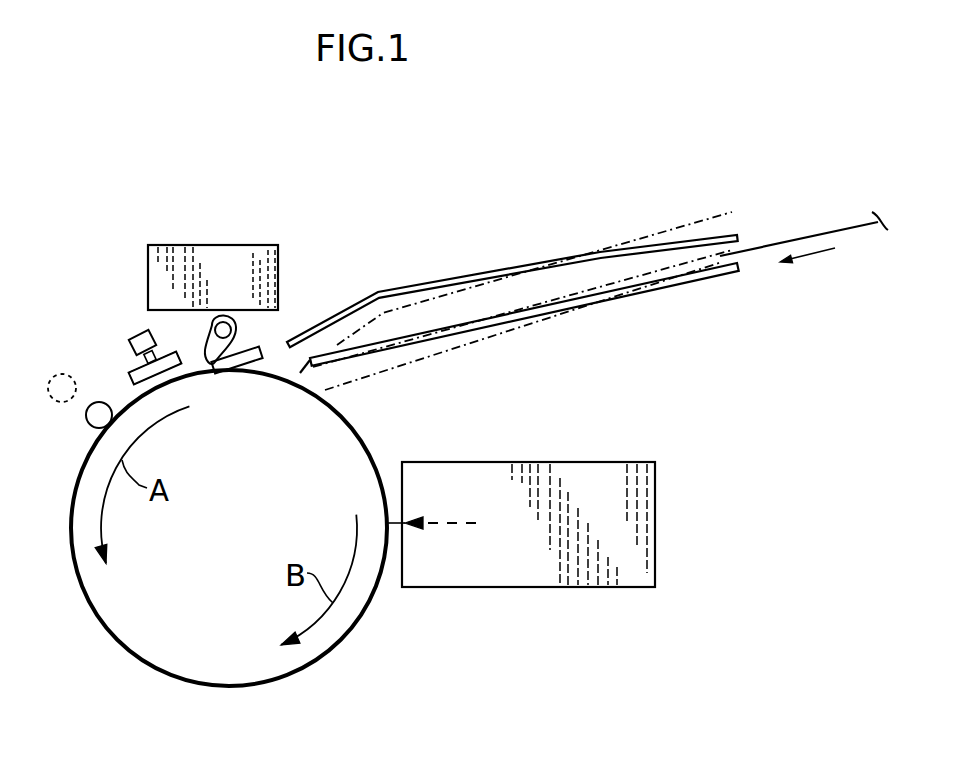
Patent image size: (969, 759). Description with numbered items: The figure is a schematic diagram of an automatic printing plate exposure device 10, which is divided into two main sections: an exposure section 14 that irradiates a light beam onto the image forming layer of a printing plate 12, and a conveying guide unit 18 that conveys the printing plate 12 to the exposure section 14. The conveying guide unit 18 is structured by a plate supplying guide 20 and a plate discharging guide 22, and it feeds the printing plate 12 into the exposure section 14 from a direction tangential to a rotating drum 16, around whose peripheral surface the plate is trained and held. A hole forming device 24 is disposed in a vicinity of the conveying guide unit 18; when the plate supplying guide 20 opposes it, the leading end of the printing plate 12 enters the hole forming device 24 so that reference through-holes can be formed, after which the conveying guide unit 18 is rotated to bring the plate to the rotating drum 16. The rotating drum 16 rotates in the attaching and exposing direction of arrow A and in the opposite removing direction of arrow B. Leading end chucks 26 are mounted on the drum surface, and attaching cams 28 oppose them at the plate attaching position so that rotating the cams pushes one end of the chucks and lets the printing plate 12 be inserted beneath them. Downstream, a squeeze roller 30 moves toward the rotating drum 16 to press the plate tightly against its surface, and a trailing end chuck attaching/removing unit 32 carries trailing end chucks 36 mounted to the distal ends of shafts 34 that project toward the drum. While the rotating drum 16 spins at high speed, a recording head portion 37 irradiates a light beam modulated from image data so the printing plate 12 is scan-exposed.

The automatic printing plate exposure device 10 is at (405, 192).
The printing plate 12 is at (800, 240).
The exposure section 14 is at (355, 652).
The rotating drum 16 is at (160, 670).
The conveying guide unit 18 is at (513, 316).
The plate supplying guide 20 is at (443, 333).
The plate discharging guide 22 is at (594, 262).
The hole forming device 24 is at (195, 245).
The leading end chucks 26 is at (254, 342).
The attaching cams 28 is at (237, 323).
The squeeze roller 30 is at (86, 424).
The trailing end chuck attaching/removing unit 32 is at (136, 332).
The shafts 34 is at (132, 362).
The trailing end chucks 36 is at (127, 382).
The recording head portion 37 is at (508, 588).